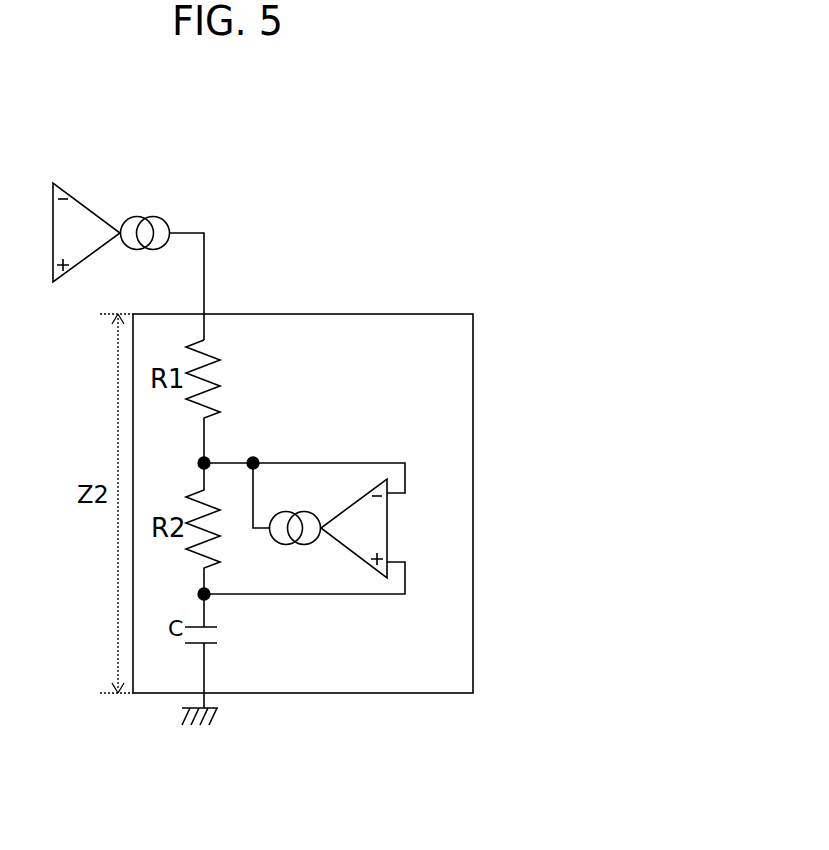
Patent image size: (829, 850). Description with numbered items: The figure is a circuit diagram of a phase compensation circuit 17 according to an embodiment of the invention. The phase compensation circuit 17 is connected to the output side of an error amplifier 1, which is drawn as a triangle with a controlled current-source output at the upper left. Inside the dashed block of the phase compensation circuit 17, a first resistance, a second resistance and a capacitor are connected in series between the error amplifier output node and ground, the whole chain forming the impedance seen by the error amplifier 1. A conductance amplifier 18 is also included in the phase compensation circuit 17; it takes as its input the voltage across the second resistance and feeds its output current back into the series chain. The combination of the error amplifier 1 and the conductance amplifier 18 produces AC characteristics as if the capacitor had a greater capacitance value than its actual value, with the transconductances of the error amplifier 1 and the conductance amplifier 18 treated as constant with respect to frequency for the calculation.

The error amplifier 1 is at (68, 185).
The phase compensation circuit 17 is at (358, 313).
The conductance amplifier 18 is at (400, 533).